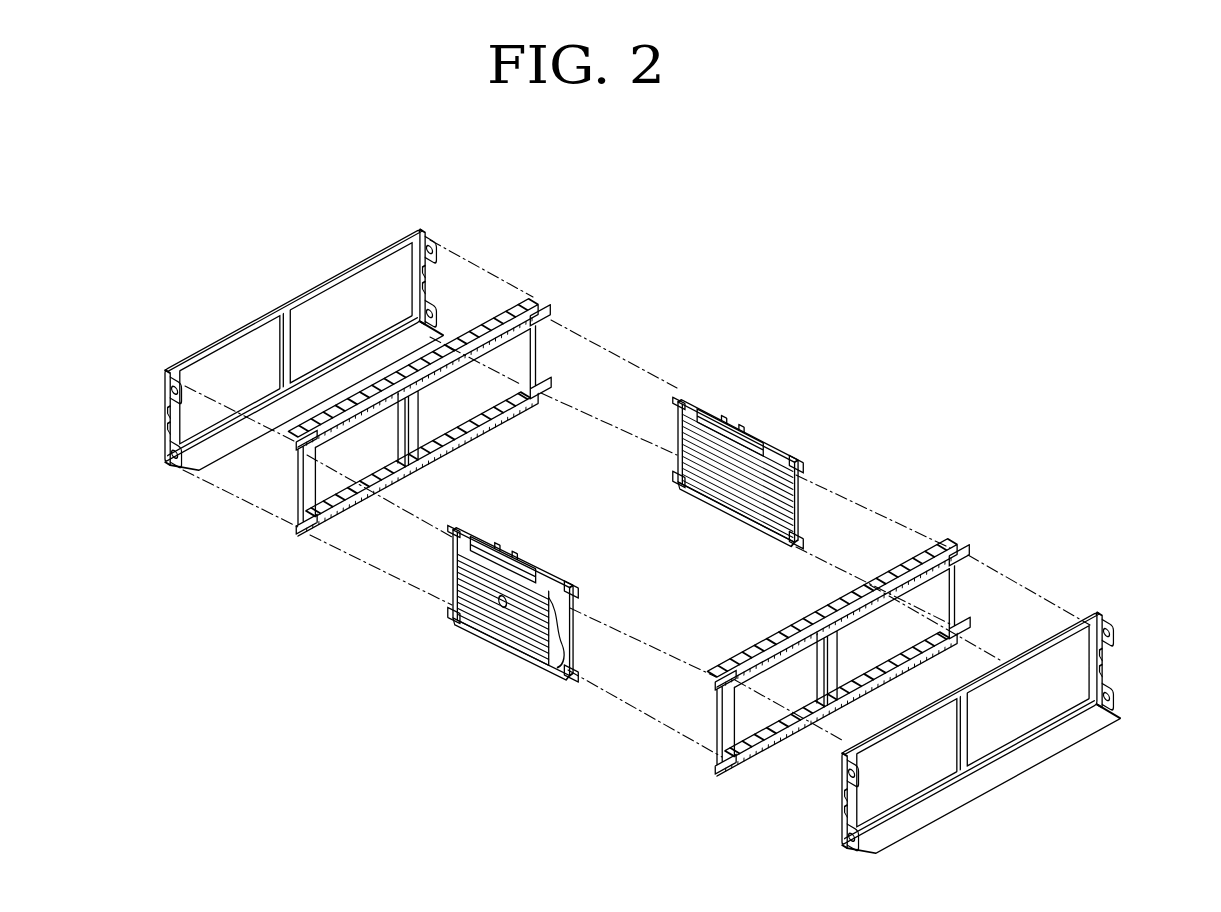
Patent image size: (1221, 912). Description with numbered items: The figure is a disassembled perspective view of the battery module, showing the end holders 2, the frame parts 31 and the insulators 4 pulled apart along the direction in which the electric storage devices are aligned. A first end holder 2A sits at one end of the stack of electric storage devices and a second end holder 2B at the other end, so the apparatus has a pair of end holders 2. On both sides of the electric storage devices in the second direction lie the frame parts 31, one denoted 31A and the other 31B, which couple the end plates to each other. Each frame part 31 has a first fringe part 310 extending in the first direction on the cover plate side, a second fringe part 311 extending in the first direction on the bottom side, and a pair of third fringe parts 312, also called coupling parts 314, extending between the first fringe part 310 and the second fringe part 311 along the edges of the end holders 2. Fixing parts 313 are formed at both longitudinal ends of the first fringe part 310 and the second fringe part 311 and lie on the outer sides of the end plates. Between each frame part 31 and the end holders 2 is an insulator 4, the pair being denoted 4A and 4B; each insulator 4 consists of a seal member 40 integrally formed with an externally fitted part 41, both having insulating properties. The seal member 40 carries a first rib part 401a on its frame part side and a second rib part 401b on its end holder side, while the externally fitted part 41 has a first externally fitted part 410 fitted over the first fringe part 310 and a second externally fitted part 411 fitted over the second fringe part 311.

The end holder 2 is at (611, 528).
The first end holder 2A is at (480, 657).
The second end holder 2B is at (747, 405).
The insulator 4 is at (620, 515).
The insulator 4A is at (841, 659).
The insulator 4B is at (422, 419).
The frame part 31 is at (619, 521).
The frame part 31A is at (969, 728).
The frame part 31B is at (292, 345).
The seal member 40 is at (620, 535).
The externally fitted part 41 is at (621, 515).
The first fringe part 310 is at (278, 326).
The second fringe part 311 is at (200, 473).
The third fringe part 312 is at (628, 530).
The fixing part 313 is at (432, 312).
The coupling part 314 is at (393, 283).
The first rib part 401a is at (294, 512).
The second rib part 401b is at (548, 352).
The first externally fitted part 410 is at (493, 313).
The second externally fitted part 411 is at (378, 505).